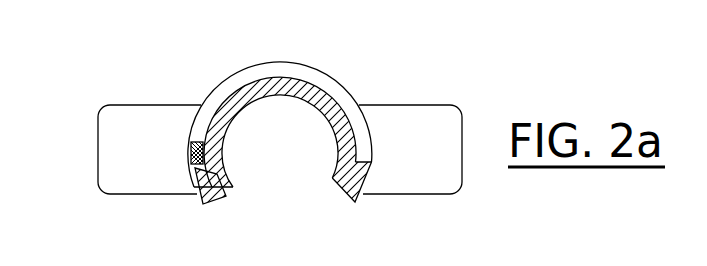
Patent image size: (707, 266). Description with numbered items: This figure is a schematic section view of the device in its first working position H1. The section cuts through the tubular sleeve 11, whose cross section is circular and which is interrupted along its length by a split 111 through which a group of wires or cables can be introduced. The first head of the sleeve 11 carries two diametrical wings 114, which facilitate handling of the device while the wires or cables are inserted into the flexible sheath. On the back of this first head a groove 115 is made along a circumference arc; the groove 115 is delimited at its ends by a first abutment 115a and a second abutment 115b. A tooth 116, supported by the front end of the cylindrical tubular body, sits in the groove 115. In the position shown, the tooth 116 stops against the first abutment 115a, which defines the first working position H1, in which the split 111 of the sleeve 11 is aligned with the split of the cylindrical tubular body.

The tubular sleeve 11 is at (305, 93).
The split 111 is at (291, 193).
The diametrical wings 114 is at (143, 118).
The groove 115 is at (228, 75).
The first abutment 115a is at (217, 205).
The second abutment 115b is at (362, 200).
The tooth 116 is at (193, 153).
The first working position H1 is at (44, 151).